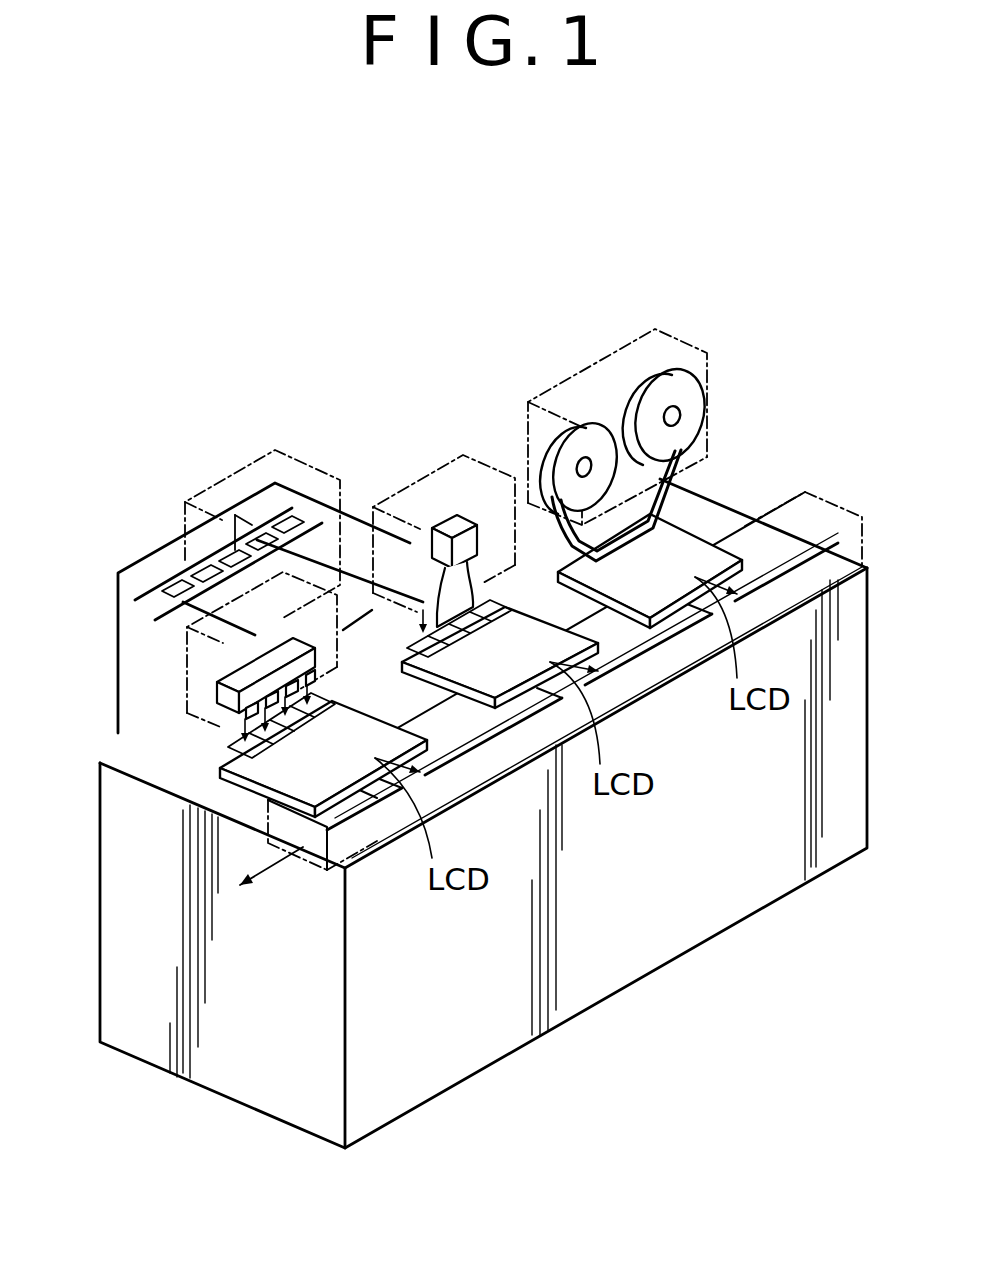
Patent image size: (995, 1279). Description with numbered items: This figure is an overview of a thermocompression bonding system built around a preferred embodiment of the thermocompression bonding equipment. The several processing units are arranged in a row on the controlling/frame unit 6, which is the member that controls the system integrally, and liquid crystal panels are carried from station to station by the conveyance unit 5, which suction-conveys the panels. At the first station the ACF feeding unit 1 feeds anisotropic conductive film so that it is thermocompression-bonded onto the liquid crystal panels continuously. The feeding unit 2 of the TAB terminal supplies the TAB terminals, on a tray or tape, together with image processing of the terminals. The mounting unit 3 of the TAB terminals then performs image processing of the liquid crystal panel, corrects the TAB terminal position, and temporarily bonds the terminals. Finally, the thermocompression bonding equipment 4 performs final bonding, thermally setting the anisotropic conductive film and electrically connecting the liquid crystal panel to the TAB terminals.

The ACF feeding unit 1 is at (680, 330).
The feeding unit of the TAB terminal 2 is at (232, 464).
The mounting unit of the TAB terminals 3 is at (479, 446).
The thermocompression bonding equipment 4 is at (180, 673).
The conveyance unit 5 is at (822, 483).
The controlling/frame unit 6 is at (786, 851).